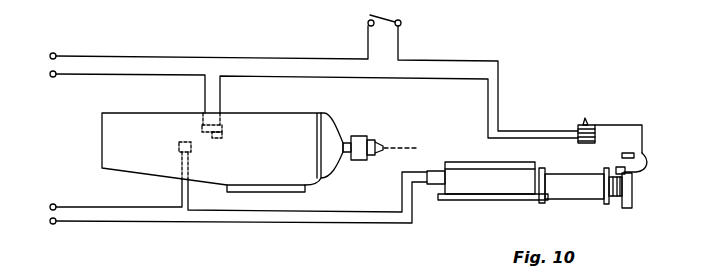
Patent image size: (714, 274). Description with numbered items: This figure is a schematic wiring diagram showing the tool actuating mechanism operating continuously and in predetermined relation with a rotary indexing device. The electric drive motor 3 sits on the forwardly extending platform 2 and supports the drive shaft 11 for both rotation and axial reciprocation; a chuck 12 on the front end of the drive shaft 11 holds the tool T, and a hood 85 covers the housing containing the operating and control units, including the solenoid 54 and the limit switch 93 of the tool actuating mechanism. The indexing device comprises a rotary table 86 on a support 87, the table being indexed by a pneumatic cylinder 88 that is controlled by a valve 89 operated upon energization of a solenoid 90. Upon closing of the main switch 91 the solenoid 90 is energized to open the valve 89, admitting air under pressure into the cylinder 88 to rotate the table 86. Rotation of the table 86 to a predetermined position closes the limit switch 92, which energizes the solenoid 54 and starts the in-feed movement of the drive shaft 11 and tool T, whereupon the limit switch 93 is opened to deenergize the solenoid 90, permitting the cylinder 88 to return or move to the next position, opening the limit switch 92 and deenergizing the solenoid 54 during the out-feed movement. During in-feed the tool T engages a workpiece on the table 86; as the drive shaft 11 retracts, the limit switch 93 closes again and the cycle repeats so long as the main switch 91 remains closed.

The platform 2 is at (275, 185).
The electric drive motor 3 is at (337, 114).
The drive shaft 11 is at (348, 154).
The chuck 12 is at (360, 135).
The tool T is at (397, 141).
The solenoid 54 is at (191, 148).
The hood 85 is at (131, 112).
The rotary table 86 is at (458, 162).
The support 87 is at (468, 200).
The pneumatic cylinder 88 is at (577, 188).
The valve 89 is at (634, 190).
The solenoid 90 is at (597, 127).
The main switch 91 is at (388, 17).
The limit switch 92 is at (433, 184).
The limit switch 93 is at (224, 131).